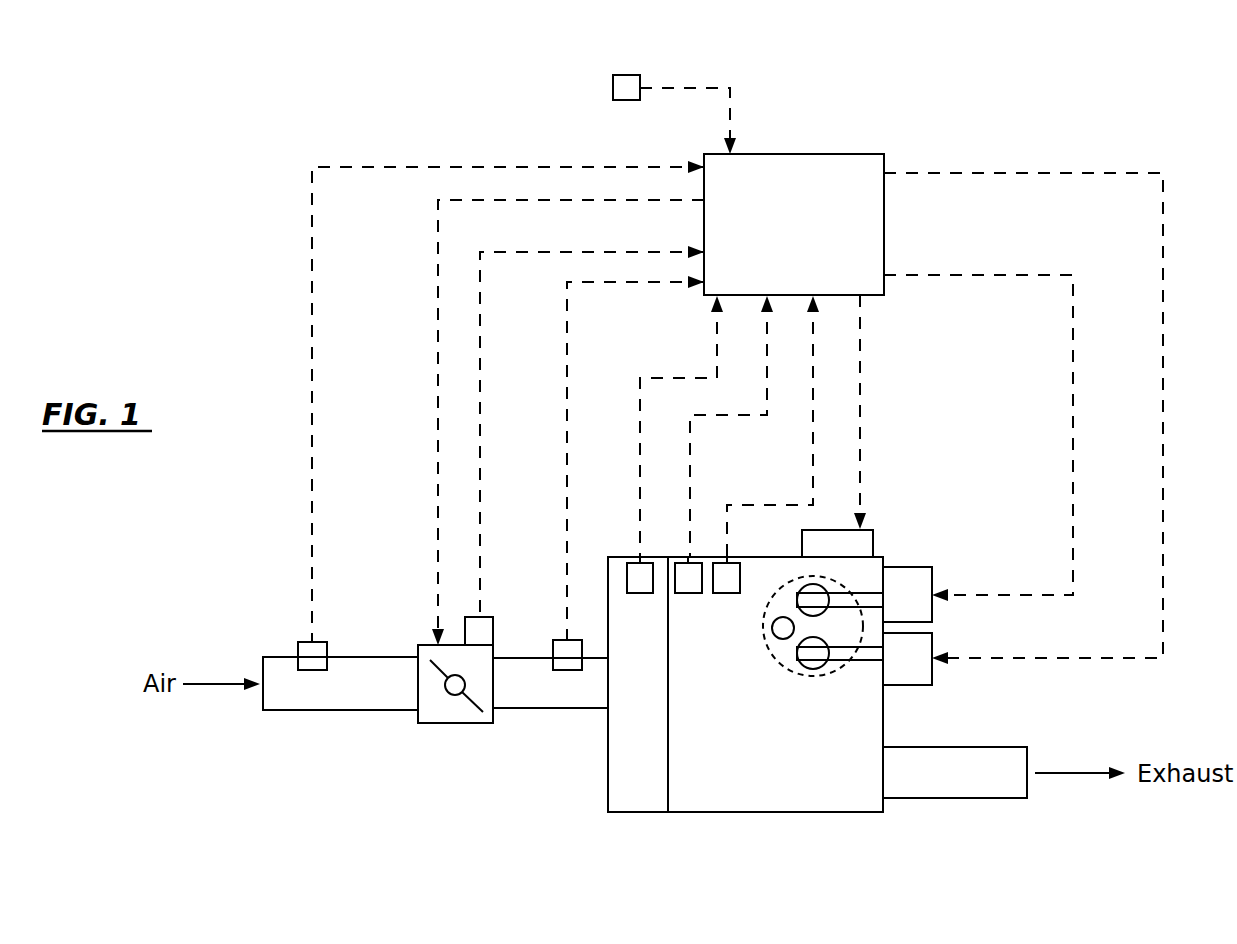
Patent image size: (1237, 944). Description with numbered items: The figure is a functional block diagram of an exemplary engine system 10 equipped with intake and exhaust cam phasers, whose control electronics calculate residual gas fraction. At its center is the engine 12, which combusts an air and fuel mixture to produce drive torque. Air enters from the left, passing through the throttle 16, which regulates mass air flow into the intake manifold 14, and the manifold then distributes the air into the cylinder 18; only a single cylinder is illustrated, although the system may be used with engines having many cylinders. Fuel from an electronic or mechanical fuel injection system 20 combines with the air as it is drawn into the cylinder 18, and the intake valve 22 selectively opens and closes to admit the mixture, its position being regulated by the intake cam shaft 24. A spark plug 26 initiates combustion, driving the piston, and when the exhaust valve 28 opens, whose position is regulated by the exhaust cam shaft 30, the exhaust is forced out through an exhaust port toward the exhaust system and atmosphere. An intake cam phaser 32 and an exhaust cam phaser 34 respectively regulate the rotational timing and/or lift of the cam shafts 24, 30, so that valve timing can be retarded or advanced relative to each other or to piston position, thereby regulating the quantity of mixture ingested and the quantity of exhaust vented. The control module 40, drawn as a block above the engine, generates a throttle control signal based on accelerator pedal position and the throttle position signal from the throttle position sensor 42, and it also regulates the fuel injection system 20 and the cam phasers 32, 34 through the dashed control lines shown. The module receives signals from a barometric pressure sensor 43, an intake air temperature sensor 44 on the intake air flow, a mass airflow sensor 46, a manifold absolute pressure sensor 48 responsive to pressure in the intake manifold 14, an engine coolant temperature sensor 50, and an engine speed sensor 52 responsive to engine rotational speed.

The engine system 10 is at (428, 88).
The engine 12 is at (825, 813).
The intake manifold 14 is at (642, 813).
The throttle 16 is at (478, 725).
The cylinder 18 is at (798, 678).
The fuel injection system 20 is at (873, 548).
The intake valve 22 is at (813, 672).
The intake cam shaft 24 is at (872, 662).
The spark plug 26 is at (783, 640).
The exhaust valve 28 is at (795, 580).
The exhaust cam shaft 30 is at (852, 610).
The intake cam phaser 32 is at (918, 685).
The exhaust cam phaser 34 is at (932, 577).
The control module 40 is at (816, 154).
The throttle position sensor 42 is at (467, 618).
The barometric pressure sensor 43 is at (628, 75).
The intake air temperature sensor 44 is at (303, 643).
The mass airflow sensor 46 is at (567, 640).
The manifold absolute pressure sensor 48 is at (627, 557).
The engine coolant temperature sensor 50 is at (682, 557).
The engine speed sensor 52 is at (717, 557).